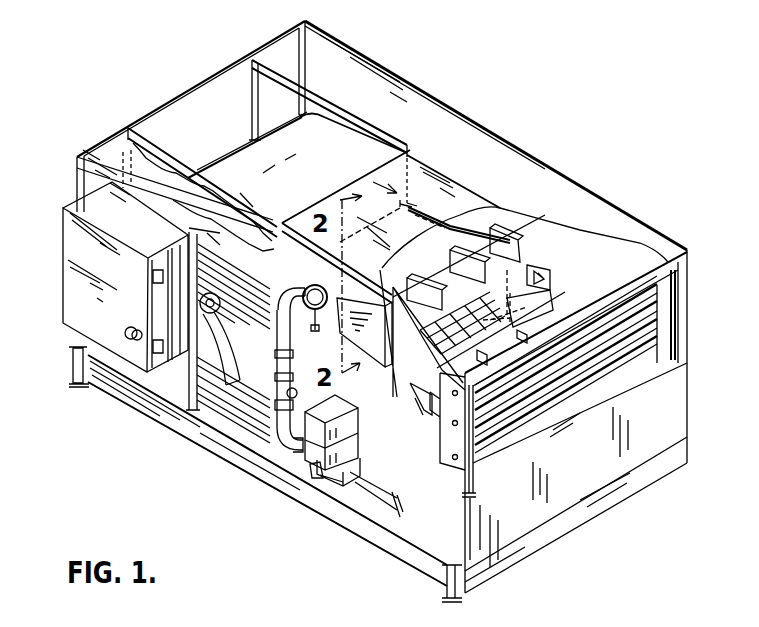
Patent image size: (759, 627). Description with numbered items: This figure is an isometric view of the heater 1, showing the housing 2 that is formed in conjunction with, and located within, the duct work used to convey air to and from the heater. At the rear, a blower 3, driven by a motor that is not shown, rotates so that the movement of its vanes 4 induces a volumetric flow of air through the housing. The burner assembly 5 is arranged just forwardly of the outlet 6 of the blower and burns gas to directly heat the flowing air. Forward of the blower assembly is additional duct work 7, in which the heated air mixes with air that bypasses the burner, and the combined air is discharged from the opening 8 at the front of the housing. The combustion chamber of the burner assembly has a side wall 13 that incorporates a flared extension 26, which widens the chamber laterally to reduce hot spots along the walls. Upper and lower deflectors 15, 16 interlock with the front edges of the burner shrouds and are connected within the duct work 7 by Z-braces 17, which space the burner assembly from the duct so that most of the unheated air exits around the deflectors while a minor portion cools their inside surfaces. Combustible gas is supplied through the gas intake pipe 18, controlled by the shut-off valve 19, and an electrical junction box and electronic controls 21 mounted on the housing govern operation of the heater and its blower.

The heater 1 is at (427, 120).
The housing 2 is at (513, 147).
The blower 3 is at (227, 160).
The vanes 4 is at (193, 367).
The burner assembly 5 is at (473, 230).
The outlet 6 is at (368, 180).
The duct work 7 is at (435, 453).
The opening 8 is at (692, 313).
The side wall 13 is at (313, 275).
The upper deflector 15 is at (535, 248).
The lower deflector 16 is at (530, 307).
The Z-braces 17 is at (510, 238).
The gas intake pipe 18 is at (277, 418).
The shut-off valve 19 is at (313, 457).
The electrical junction box and electronic controls 21 is at (62, 297).
The flared extension 26 is at (340, 410).